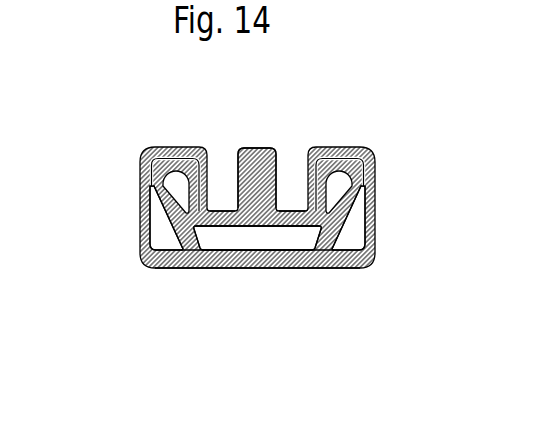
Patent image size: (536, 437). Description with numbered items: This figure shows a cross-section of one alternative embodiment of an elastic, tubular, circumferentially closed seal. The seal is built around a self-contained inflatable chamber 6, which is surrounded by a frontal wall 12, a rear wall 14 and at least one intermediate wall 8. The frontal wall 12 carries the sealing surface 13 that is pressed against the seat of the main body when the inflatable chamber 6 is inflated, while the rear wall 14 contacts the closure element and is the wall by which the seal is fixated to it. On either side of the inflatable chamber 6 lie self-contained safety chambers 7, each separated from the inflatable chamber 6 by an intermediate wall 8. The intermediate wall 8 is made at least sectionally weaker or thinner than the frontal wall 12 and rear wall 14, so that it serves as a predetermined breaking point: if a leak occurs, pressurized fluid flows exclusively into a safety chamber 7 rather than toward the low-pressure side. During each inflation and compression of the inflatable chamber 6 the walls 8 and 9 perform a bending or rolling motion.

The inflatable chamber 6 is at (235, 238).
The safety chamber 7 is at (163, 228).
The intermediate wall 8 is at (158, 188).
The wall 9 is at (142, 210).
The frontal wall 12 is at (266, 218).
The sealing surface 13 is at (254, 148).
The rear wall 14 is at (260, 267).